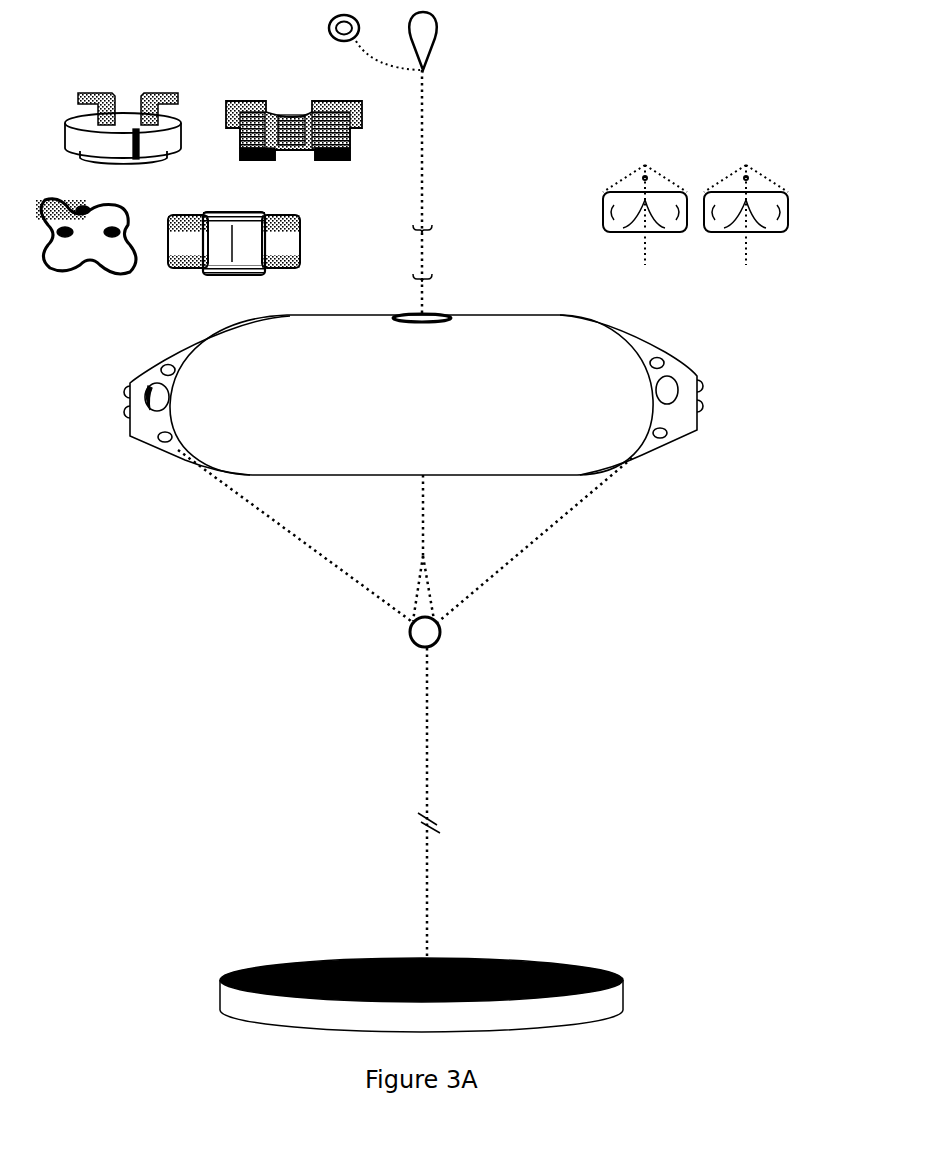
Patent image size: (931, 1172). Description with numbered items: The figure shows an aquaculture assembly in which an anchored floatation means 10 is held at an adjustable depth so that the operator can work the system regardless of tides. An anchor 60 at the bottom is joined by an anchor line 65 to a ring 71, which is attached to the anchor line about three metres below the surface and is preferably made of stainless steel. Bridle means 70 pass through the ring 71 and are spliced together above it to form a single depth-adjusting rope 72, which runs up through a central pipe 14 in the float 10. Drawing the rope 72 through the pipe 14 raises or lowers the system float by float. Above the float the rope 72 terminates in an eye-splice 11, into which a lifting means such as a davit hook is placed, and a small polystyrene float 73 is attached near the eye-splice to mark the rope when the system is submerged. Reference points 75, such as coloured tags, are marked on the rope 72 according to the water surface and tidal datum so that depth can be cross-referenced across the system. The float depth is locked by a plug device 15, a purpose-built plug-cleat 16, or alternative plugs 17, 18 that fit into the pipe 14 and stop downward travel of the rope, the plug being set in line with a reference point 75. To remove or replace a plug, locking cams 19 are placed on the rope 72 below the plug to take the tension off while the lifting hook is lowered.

The floatation means 10 is at (562, 340).
The eye-splice 11 is at (437, 32).
The central pipe 14 is at (438, 313).
The plug device 15 is at (122, 92).
The plug-cleat 16 is at (308, 99).
The plug 17 is at (95, 216).
The plug 18 is at (292, 215).
The locking cams 19 is at (603, 210).
The anchor 60 is at (595, 965).
The anchor line 65 is at (432, 787).
The bridle means 70 is at (525, 540).
The ring 71 is at (441, 634).
The depth-adjusting rope 72 is at (424, 153).
The polystyrene float 73 is at (328, 30).
The reference points 75 is at (411, 278).